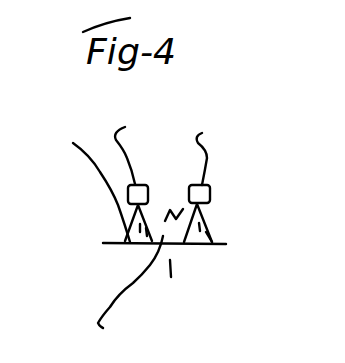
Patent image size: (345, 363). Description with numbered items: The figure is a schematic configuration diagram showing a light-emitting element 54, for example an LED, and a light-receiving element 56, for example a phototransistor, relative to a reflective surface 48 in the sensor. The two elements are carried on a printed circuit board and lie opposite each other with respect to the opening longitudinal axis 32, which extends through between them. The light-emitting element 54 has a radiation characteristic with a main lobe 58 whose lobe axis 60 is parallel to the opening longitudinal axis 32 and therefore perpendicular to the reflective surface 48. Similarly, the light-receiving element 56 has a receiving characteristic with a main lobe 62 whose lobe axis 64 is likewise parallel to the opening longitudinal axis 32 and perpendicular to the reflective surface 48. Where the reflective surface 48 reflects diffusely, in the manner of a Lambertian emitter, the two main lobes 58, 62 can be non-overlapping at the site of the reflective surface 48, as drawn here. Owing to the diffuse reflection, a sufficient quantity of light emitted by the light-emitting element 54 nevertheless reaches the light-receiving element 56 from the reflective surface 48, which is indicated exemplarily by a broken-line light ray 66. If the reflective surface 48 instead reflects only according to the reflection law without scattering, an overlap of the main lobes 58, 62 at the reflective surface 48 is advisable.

The opening longitudinal axis 32 is at (168, 287).
The reflective surface 48 is at (113, 242).
The light-emitting element 54 is at (131, 142).
The light-receiving element 56 is at (215, 143).
The main lobe 58 is at (150, 235).
The lobe axis 60 is at (84, 184).
The main lobe 62 is at (208, 220).
The lobe axis 64 is at (208, 237).
The light ray 66 is at (130, 289).